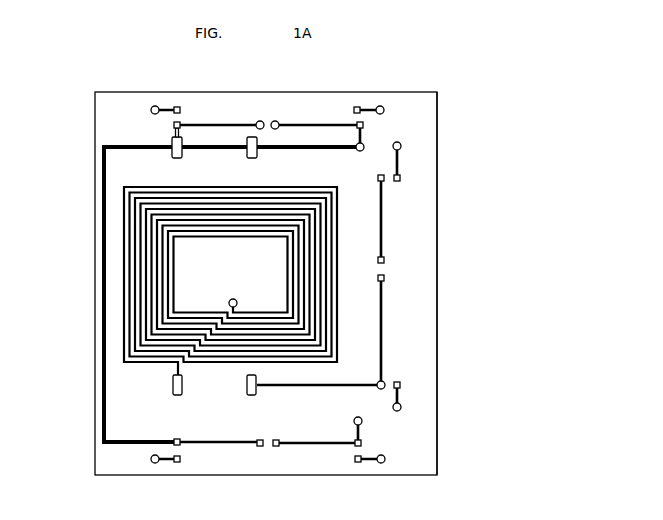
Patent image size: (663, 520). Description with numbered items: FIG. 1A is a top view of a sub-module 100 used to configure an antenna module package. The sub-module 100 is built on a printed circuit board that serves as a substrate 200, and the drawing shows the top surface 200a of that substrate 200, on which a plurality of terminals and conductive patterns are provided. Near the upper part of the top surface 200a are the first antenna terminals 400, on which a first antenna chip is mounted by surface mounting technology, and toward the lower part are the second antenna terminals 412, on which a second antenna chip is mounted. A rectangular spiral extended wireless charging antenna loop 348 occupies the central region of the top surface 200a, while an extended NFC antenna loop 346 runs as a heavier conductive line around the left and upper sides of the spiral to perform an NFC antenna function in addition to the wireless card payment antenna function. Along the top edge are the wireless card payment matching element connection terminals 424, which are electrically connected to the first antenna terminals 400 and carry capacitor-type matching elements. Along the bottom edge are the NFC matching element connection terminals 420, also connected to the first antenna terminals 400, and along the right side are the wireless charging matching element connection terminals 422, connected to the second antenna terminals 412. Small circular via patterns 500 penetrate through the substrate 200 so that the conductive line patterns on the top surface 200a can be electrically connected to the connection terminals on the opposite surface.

The sub-module 100 is at (92, 64).
The substrate 200 is at (508, 316).
The top surface 200a is at (437, 316).
The extended NFC antenna loop 346 is at (102, 244).
The extended wireless charging antenna loop 348 is at (124, 208).
The first antenna terminals 400 is at (247, 152).
The second antenna terminals 412 is at (178, 397).
The NFC matching element connection terminals 420 is at (174, 441).
The wireless charging matching element connection terminals 422 is at (384, 180).
The wireless card payment matching element connection terminals 424 is at (177, 107).
The via pattern 500 is at (154, 106).